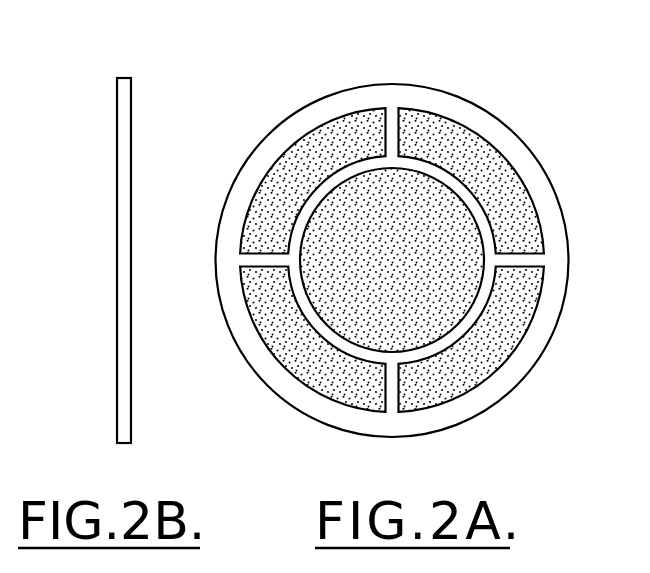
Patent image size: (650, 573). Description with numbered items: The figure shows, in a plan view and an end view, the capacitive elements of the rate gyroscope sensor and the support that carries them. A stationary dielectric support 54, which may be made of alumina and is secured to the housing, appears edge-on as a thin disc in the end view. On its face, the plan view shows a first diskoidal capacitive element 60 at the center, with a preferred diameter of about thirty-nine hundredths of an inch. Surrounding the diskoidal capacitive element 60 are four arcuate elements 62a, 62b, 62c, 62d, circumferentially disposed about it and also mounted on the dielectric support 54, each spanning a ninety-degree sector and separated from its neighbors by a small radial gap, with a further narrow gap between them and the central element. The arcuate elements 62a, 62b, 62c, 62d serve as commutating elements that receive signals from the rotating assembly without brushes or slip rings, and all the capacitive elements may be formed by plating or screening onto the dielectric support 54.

In FIG. 2B, the stationary dielectric support 54 is at (125, 76).
In FIG. 2A, the stationary dielectric support 54 is at (396, 82).
In FIG. 2A, the first diskoidal capacitive element 60 is at (425, 178).
In FIG. 2A, the arcuate element 62a is at (300, 142).
In FIG. 2A, the arcuate element 62b is at (272, 352).
In FIG. 2A, the arcuate element 62c is at (507, 360).
In FIG. 2A, the arcuate element 62d is at (511, 184).